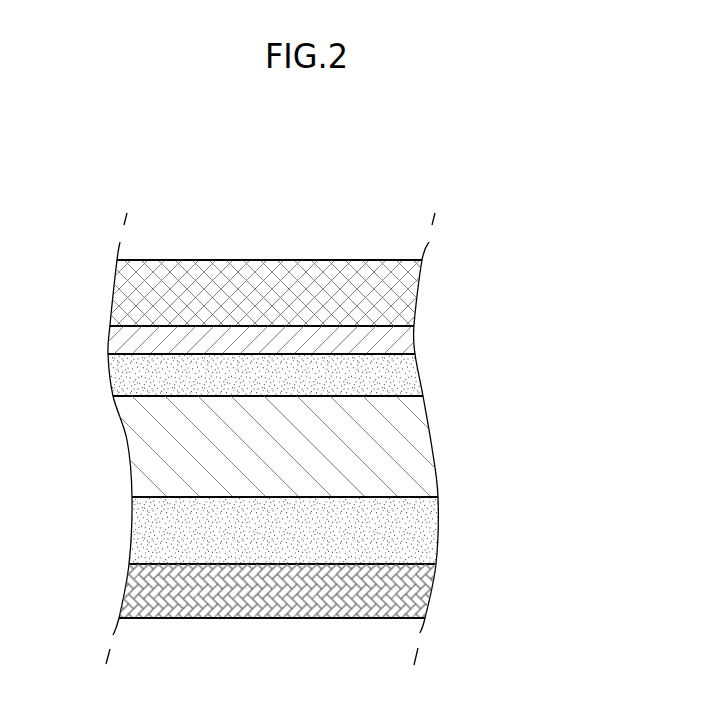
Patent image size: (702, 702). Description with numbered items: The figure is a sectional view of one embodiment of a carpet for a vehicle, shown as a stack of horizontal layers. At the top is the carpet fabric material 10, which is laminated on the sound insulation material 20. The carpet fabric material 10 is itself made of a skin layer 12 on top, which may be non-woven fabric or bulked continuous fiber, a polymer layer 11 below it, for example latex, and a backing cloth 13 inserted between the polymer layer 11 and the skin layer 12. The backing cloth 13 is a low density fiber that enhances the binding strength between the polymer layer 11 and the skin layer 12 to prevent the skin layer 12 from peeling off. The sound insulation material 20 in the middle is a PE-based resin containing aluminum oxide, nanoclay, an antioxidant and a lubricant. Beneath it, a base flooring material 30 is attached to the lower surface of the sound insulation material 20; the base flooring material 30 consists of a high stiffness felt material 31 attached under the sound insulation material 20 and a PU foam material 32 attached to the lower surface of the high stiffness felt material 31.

The carpet fabric material 10 is at (326, 328).
The polymer layer 11 is at (301, 375).
The skin layer 12 is at (410, 300).
The backing cloth 13 is at (411, 344).
The sound insulation material 20 is at (410, 452).
The base flooring material 30 is at (329, 557).
The high stiffness felt material 31 is at (412, 540).
The PU foam material 32 is at (301, 591).